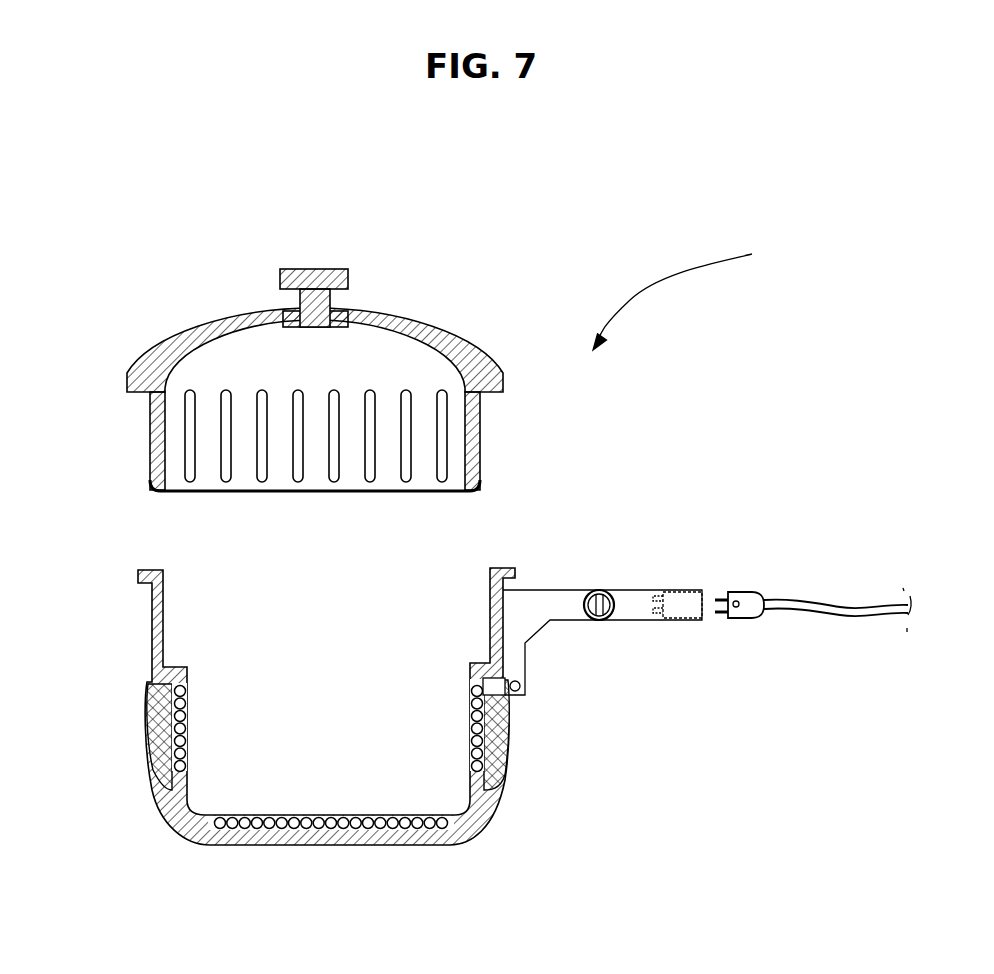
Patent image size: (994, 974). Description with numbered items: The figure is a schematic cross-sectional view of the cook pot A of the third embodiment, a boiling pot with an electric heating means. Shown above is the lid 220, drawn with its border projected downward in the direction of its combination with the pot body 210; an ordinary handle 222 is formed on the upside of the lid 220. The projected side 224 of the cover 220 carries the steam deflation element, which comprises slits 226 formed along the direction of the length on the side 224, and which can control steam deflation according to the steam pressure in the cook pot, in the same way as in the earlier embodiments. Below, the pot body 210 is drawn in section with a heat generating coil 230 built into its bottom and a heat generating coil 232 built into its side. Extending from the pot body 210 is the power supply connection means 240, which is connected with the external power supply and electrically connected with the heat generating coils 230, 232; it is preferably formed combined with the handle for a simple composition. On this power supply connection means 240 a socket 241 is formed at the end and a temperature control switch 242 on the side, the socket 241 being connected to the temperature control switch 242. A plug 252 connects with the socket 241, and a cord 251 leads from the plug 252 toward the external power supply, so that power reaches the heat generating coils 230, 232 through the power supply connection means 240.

The pot body 210 is at (148, 743).
The lid 220 is at (420, 317).
The handle 222 is at (327, 270).
The side of the cover 224 is at (476, 397).
The slit 226 is at (443, 429).
The heat generating coil 230 is at (437, 843).
The heat generating coil 232 is at (507, 760).
The power supply connection means 240 is at (688, 648).
The socket 241 is at (677, 600).
The temperature control switch 242 is at (601, 588).
The power cord 251 is at (852, 611).
The plug 252 is at (752, 593).
The cook pot A is at (682, 293).